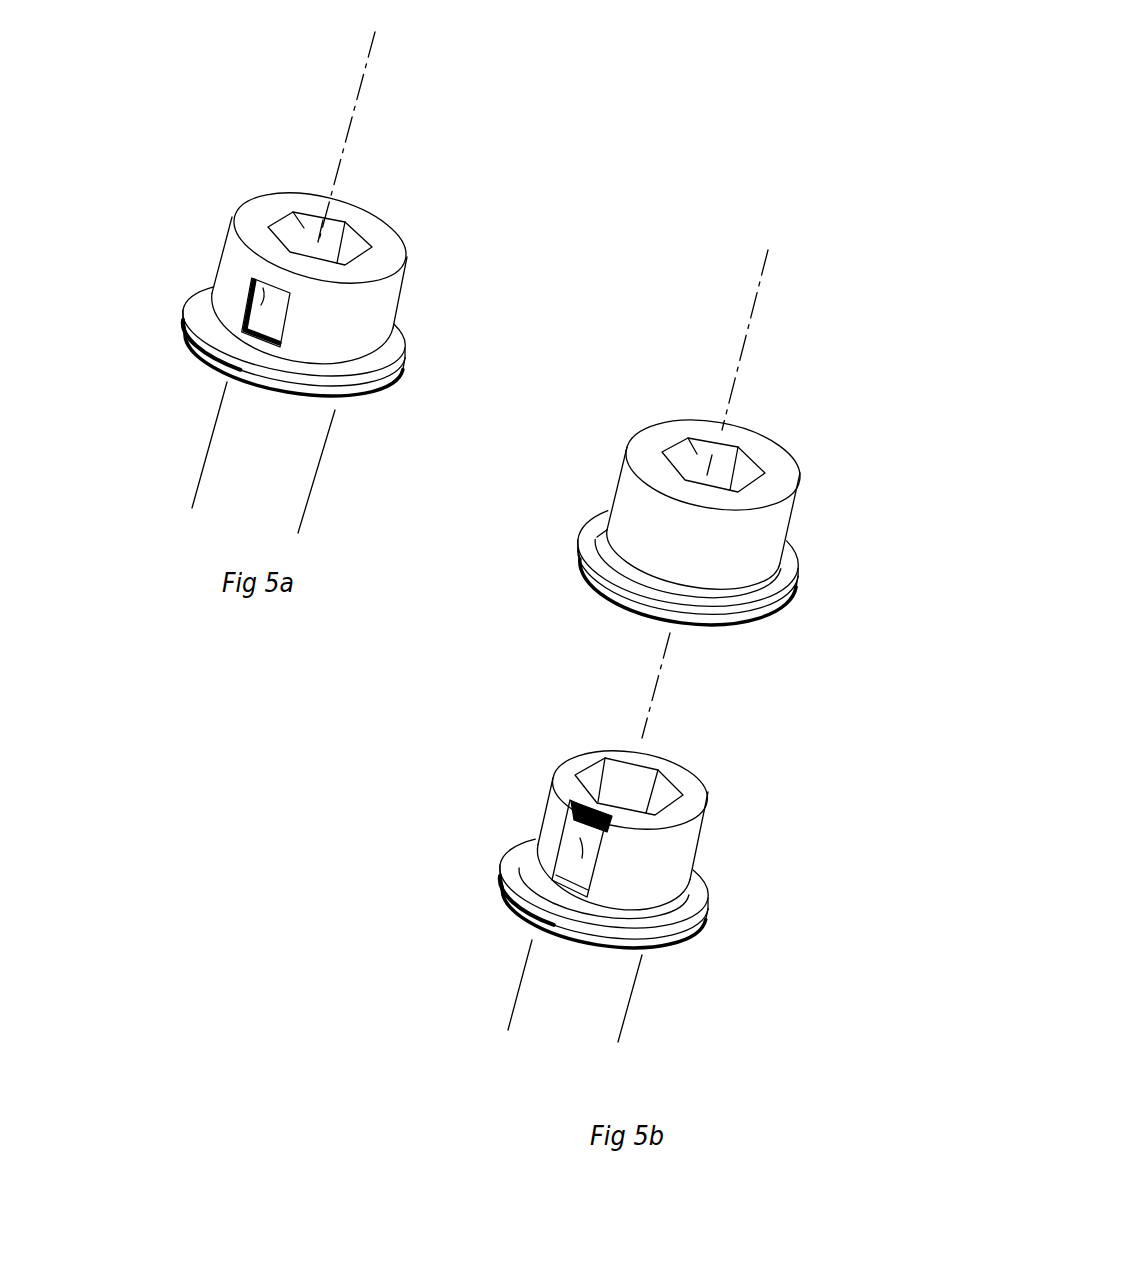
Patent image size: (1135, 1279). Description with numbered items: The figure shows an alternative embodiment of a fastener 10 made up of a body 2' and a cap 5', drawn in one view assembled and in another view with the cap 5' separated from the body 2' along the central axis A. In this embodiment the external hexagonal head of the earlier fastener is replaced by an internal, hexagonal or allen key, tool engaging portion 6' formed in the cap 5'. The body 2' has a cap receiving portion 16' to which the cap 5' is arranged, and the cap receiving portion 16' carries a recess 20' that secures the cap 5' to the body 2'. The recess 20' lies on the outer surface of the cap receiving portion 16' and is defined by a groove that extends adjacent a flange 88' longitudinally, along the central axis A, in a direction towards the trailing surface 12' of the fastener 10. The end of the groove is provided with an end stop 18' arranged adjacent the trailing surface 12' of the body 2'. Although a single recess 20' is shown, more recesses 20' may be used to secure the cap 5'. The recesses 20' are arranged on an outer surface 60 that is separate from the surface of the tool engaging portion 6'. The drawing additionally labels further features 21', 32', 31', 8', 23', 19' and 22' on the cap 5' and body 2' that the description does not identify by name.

In FIG. 5A, the fastener 10 is at (433, 80).
In FIG. 5B, the fastener 10 is at (905, 333).
In FIG. 5A, the body 2' is at (294, 286).
In FIG. 5A, the cap 5' is at (302, 169).
In FIG. 5B, the cap 5' is at (723, 475).
In FIG. 5A, the internal tool engaging portion 6' is at (267, 152).
In FIG. 5B, the internal tool engaging portion 6' is at (685, 426).
In FIG. 5A, the outer surface 60 is at (366, 313).
In FIG. 5A, the window opening 21' is at (216, 262).
In FIG. 5A, the shoulder ring 32' is at (351, 331).
In FIG. 5B, the shoulder ring 32' is at (648, 517).
In FIG. 5B, the flange 31' is at (642, 563).
In FIG. 5A, the collar ring 8' is at (341, 355).
In FIG. 5B, the collar ring 8' is at (727, 586).
In FIG. 5A, the flange ring 23' is at (294, 426).
In FIG. 5B, the flange ring 23' is at (557, 889).
In FIG. 5B, the cap receiving portion 16' is at (628, 848).
In FIG. 5B, the trailing surface 12' is at (655, 776).
In FIG. 5B, the end stop 18' is at (624, 782).
In FIG. 5B, the notch 19' is at (556, 743).
In FIG. 5B, the recess 20' is at (531, 813).
In FIG. 5B, the shoulder ring 22' is at (564, 846).
In FIG. 5B, the flange 88' is at (647, 959).
In FIG. 5A, the central axis A is at (363, 72).
In FIG. 5B, the central axis A is at (750, 313).